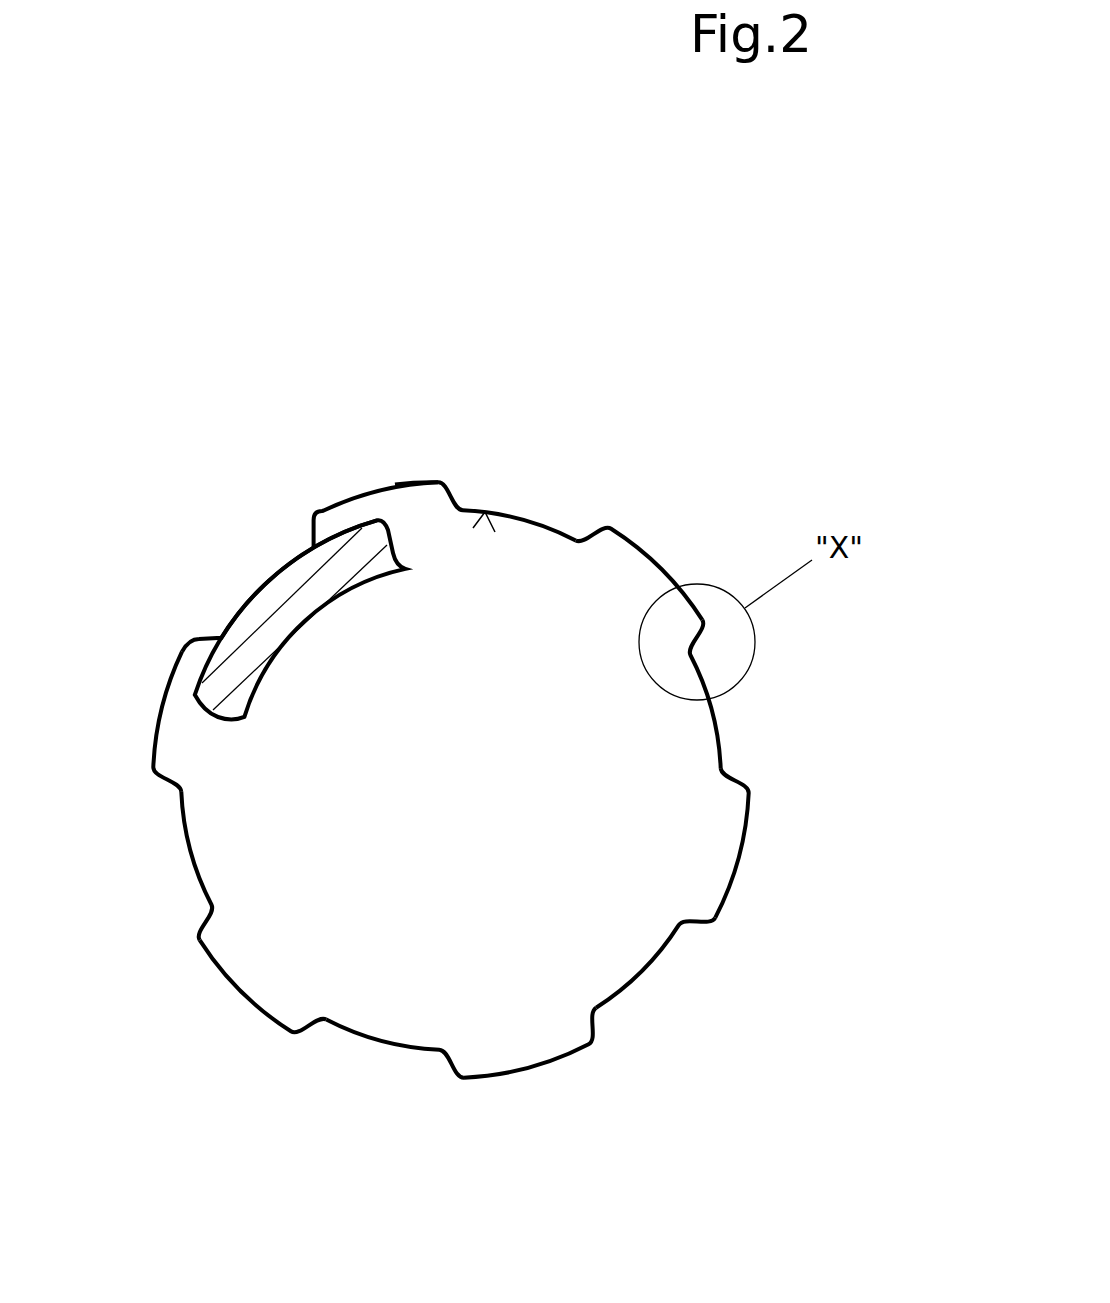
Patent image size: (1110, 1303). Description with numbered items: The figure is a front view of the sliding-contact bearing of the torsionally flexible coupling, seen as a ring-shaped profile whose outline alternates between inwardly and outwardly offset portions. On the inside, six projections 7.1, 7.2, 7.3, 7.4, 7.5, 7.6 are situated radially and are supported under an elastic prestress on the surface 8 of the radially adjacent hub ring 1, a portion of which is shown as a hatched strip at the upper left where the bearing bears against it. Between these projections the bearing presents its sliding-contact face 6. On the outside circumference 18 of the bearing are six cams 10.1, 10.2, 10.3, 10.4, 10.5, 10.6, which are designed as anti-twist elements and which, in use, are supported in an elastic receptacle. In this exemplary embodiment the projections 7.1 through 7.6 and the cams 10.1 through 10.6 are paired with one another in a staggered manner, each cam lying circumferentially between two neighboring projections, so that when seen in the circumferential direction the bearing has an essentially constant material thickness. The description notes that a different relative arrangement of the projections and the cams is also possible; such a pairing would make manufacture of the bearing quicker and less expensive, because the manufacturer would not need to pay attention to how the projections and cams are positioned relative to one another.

The hub ring 1 is at (277, 593).
The sliding-contact face 6 is at (495, 532).
The projection 7.1 is at (555, 530).
The projection 7.2 is at (719, 724).
The projection 7.3 is at (652, 963).
The projection 7.4 is at (387, 1041).
The projection 7.5 is at (191, 850).
The projection 7.6 is at (240, 610).
The surface of the hub ring 8 is at (346, 519).
The cam 10.1 is at (635, 542).
The cam 10.2 is at (742, 862).
The cam 10.3 is at (543, 1065).
The cam 10.4 is at (242, 992).
The cam 10.5 is at (162, 705).
The cam 10.6 is at (370, 493).
The outside circumference of the sliding-contact bearing 18 is at (425, 471).